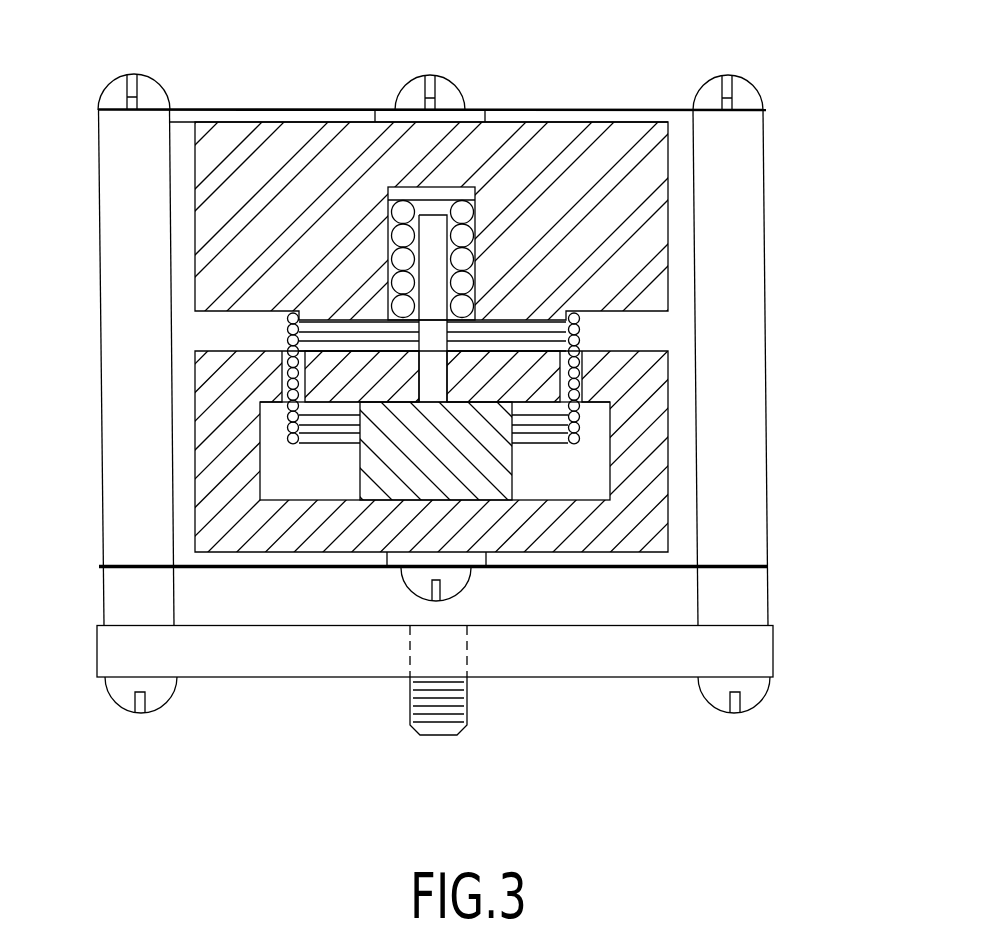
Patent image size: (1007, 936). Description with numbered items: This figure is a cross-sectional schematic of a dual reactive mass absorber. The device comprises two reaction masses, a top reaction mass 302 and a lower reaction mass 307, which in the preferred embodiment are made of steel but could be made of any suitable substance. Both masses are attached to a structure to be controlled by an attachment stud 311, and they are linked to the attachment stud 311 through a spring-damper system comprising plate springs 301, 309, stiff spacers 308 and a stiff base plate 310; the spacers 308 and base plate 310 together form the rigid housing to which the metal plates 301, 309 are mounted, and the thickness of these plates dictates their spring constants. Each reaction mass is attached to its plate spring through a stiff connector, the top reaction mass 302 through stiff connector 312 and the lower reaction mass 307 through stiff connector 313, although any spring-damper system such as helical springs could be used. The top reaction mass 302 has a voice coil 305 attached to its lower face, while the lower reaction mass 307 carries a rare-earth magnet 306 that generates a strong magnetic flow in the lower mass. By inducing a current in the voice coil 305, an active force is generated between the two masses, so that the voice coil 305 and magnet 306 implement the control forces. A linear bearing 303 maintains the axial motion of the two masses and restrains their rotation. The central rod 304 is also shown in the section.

The plate spring 301 is at (609, 107).
The top reaction mass 302 is at (644, 196).
The linear bearing 303 is at (486, 276).
The rod / shaft 304 is at (442, 342).
The voice coil 305 is at (588, 416).
The rare-earth magnet 306 is at (494, 467).
The lower reaction mass 307 is at (651, 500).
The stiff spacers 308 is at (746, 528).
The plate spring 309 is at (657, 568).
The base plate 310 is at (591, 683).
The attachment stud 311 is at (459, 737).
The stiff connector 312 is at (474, 112).
The stiff connector 313 is at (393, 563).